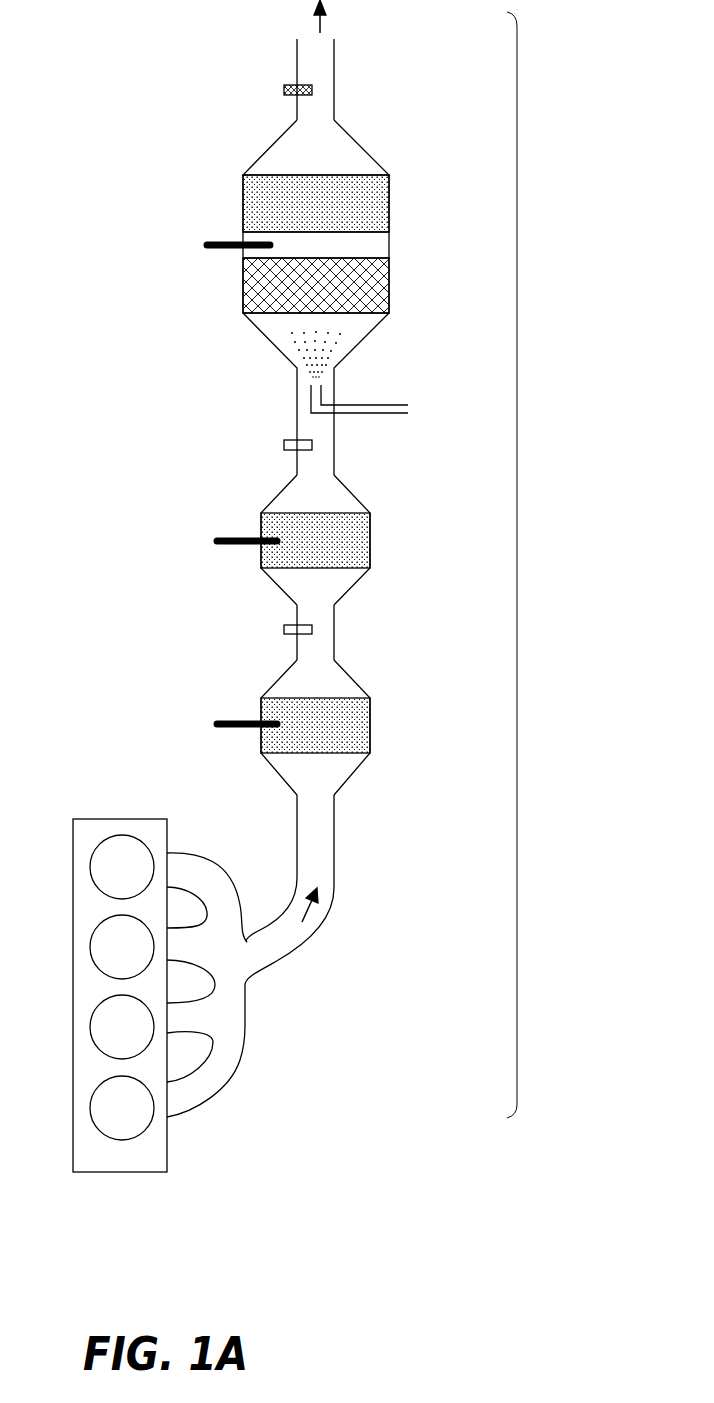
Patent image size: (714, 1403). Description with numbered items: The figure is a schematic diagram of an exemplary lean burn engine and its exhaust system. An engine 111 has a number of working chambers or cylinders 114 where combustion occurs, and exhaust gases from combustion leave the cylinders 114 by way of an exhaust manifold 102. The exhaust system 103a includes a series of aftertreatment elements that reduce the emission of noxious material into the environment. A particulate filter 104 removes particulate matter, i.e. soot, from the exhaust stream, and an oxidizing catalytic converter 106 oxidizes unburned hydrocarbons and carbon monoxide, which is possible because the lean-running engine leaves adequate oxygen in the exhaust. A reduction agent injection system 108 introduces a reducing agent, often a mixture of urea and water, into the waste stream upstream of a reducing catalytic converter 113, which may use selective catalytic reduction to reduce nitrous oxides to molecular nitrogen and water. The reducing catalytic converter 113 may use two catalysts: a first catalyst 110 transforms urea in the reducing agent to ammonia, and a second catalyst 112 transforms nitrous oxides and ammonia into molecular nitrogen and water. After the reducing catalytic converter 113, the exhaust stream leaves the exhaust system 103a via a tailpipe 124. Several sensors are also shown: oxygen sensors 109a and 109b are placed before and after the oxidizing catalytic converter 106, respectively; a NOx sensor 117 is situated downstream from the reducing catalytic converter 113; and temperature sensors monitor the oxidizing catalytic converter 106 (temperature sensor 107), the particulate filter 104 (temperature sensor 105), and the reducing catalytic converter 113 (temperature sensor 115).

The exhaust manifold 102 is at (247, 1023).
The exhaust system 103a is at (519, 551).
The particulate filter 104 is at (362, 723).
The temperature sensor 105 is at (242, 729).
The oxidizing catalytic converter 106 is at (362, 540).
The temperature sensor 107 is at (230, 547).
The reduction agent injection system 108 is at (418, 409).
The oxygen sensor 109a is at (284, 634).
The oxygen sensor 109b is at (284, 449).
The first catalyst 110 is at (389, 280).
The engine 111 is at (73, 1067).
The second catalyst 112 is at (372, 200).
The reducing catalytic converter 113 is at (389, 238).
The cylinder 114 is at (150, 1118).
The temperature sensor 115 is at (207, 250).
The NOx sensor 117 is at (284, 95).
The tailpipe 124 is at (334, 78).